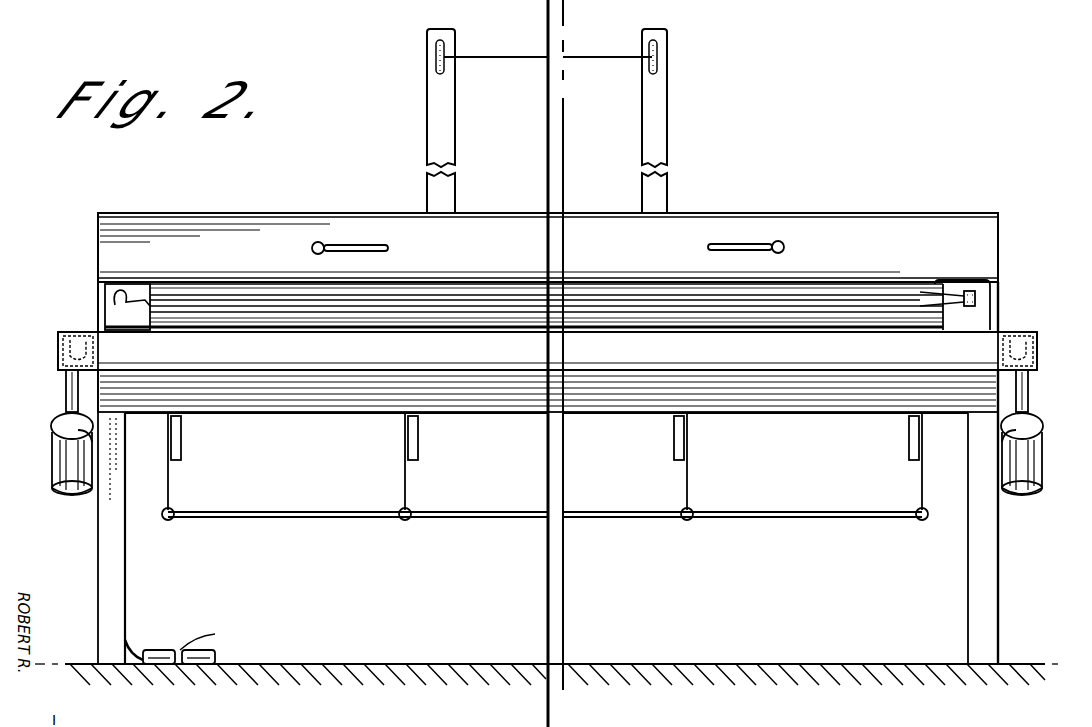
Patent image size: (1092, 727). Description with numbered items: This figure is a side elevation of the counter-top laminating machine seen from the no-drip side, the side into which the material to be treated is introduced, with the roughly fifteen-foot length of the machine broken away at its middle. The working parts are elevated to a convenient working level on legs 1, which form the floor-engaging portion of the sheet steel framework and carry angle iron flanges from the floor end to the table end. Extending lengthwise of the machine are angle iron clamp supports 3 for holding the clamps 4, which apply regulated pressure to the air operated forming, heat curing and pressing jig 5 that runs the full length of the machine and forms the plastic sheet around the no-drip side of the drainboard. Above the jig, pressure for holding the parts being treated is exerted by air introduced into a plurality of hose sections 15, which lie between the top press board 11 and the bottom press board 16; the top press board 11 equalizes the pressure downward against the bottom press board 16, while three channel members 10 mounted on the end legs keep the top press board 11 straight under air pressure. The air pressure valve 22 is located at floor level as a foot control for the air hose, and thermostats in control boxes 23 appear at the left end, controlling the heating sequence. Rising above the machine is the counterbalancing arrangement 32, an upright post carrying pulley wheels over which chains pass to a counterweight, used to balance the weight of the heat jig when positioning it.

The legs 1 is at (115, 567).
The clamp supports 3 is at (183, 445).
The clamps 4 is at (175, 490).
The air operated forming, heat curing and pressing jig 5 is at (60, 360).
The channel members 10 is at (100, 257).
The top press board 11 is at (937, 282).
The hose sections 15 is at (107, 311).
The bottom press board 16 is at (935, 316).
The air pressure valve 22 is at (163, 648).
The thermostats in control boxes 23 is at (55, 427).
The counterbalancing arrangement 32 is at (455, 123).